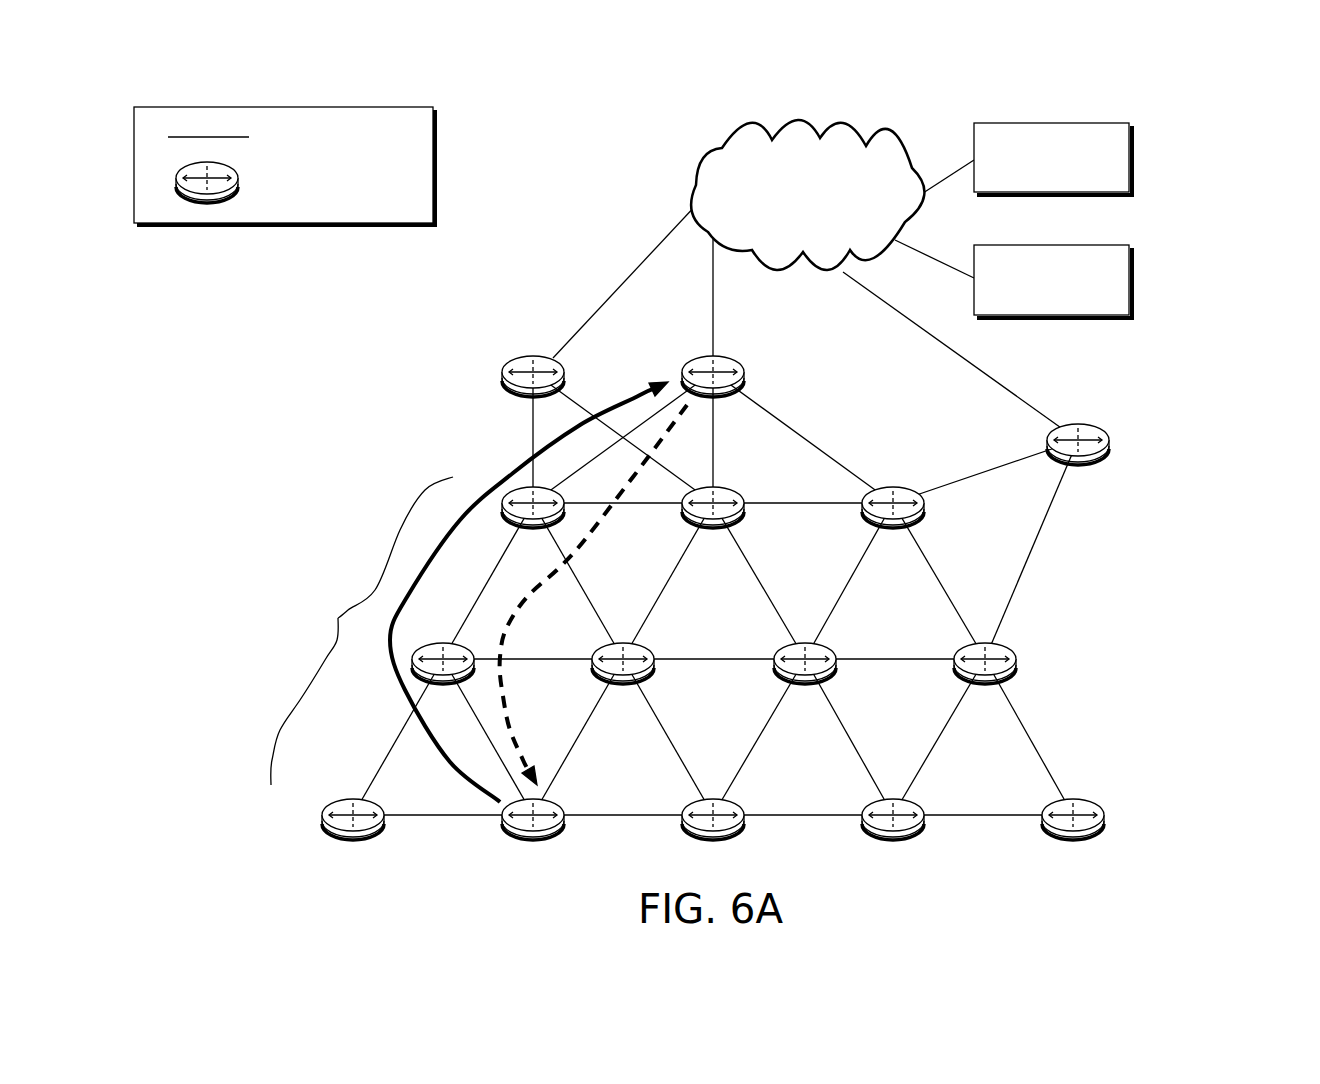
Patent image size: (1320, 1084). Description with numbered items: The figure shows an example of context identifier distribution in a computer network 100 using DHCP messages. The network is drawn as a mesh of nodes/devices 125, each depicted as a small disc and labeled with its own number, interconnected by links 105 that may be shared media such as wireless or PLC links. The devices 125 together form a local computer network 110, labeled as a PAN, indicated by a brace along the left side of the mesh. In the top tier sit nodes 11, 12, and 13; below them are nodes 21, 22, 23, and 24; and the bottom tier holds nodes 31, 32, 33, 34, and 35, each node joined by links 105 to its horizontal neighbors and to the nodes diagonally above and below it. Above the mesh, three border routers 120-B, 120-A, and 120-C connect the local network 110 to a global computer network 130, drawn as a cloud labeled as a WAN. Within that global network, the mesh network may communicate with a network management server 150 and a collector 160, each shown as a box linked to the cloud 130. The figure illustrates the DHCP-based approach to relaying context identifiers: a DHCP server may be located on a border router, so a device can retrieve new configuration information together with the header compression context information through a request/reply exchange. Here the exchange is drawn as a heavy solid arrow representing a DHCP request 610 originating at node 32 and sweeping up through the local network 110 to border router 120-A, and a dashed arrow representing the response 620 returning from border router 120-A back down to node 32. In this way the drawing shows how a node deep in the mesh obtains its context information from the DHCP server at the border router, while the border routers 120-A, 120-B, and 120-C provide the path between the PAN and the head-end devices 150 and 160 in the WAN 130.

The computer network 100 is at (1192, 167).
The links 105 is at (623, 469).
The local computer network 110 is at (301, 631).
The nodes/devices 125 is at (287, 182).
The global computer network 130 is at (792, 233).
The network management server 150 is at (1036, 181).
The collector 160 is at (1036, 304).
The border router 120-A is at (713, 332).
The border router 120-B is at (535, 332).
The border router 120-C is at (1118, 409).
The DHCP request 610 is at (499, 474).
The response 620 is at (583, 543).
The node 11 is at (533, 525).
The node 12 is at (713, 525).
The node 13 is at (893, 524).
The node 21 is at (443, 681).
The node 22 is at (623, 681).
The node 23 is at (805, 681).
The node 24 is at (985, 681).
The node 31 is at (353, 837).
The node 32 is at (533, 837).
The node 33 is at (713, 837).
The node 34 is at (893, 837).
The node 35 is at (1073, 837).